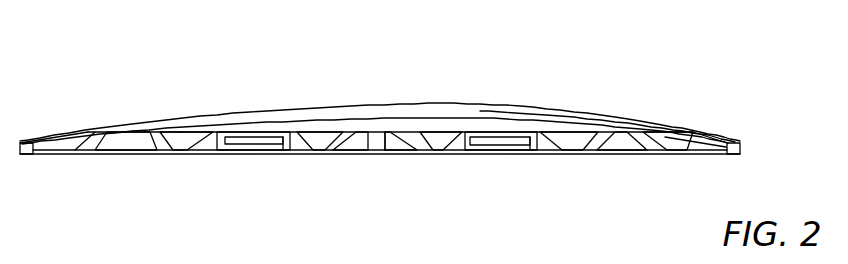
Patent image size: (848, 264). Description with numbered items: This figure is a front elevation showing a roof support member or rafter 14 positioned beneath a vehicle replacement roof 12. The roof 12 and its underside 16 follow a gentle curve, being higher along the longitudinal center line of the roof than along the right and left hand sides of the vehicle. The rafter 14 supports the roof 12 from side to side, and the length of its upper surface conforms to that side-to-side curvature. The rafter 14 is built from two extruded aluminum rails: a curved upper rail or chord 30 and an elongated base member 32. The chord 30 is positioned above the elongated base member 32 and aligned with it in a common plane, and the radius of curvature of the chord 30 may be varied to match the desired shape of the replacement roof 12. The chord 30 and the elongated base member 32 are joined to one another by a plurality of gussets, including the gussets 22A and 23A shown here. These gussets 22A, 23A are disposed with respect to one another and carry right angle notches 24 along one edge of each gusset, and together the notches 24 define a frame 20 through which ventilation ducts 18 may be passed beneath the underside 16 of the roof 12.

The vehicle replacement roof 12 is at (720, 134).
The rafter 14 is at (45, 155).
The underside 16 is at (312, 118).
The ventilation ducts 18 is at (249, 131).
The frame 20 is at (227, 155).
The gusset 22A is at (205, 155).
The gusset 23A is at (310, 150).
The right angle notches 24 is at (287, 110).
The chord 30 is at (588, 118).
The elongated base member 32 is at (650, 155).